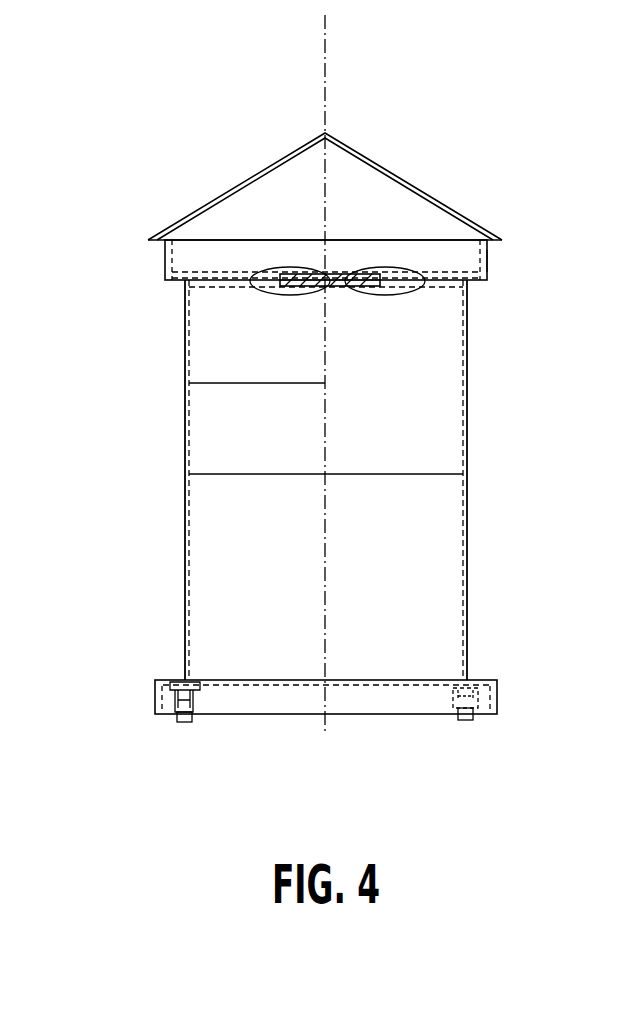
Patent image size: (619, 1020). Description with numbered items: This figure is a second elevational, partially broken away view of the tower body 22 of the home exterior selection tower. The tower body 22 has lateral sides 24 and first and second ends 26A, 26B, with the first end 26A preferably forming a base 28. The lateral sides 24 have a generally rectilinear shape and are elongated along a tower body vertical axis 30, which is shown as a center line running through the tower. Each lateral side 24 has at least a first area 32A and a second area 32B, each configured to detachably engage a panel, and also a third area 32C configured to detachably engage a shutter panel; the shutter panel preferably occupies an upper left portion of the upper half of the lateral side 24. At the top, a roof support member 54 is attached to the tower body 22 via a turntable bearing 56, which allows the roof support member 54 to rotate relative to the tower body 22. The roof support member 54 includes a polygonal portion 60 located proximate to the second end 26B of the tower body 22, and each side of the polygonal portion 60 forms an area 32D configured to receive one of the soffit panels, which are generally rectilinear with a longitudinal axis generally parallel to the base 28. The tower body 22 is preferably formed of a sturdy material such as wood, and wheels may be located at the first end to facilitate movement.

The tower body 22 is at (467, 362).
The lateral sides 24 is at (287, 437).
The first end 26A is at (337, 683).
The second end 26B is at (432, 280).
The base 28 is at (172, 682).
The tower body vertical axis 30 is at (327, 445).
The first area 32A is at (282, 593).
The second area 32B is at (435, 410).
The third area 32C is at (270, 357).
The area 32D is at (275, 257).
The roof support member 54 is at (333, 167).
The turntable bearing 56 is at (372, 281).
The polygonal portion 60 is at (467, 260).